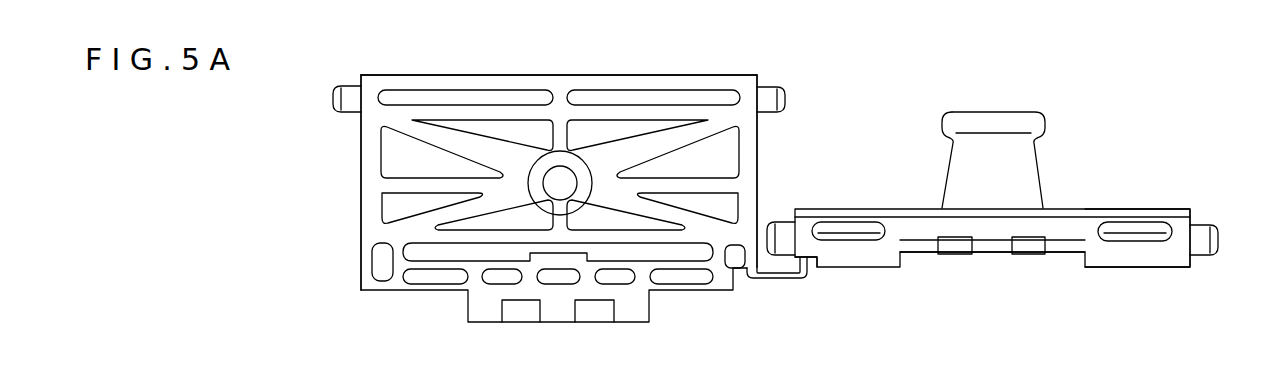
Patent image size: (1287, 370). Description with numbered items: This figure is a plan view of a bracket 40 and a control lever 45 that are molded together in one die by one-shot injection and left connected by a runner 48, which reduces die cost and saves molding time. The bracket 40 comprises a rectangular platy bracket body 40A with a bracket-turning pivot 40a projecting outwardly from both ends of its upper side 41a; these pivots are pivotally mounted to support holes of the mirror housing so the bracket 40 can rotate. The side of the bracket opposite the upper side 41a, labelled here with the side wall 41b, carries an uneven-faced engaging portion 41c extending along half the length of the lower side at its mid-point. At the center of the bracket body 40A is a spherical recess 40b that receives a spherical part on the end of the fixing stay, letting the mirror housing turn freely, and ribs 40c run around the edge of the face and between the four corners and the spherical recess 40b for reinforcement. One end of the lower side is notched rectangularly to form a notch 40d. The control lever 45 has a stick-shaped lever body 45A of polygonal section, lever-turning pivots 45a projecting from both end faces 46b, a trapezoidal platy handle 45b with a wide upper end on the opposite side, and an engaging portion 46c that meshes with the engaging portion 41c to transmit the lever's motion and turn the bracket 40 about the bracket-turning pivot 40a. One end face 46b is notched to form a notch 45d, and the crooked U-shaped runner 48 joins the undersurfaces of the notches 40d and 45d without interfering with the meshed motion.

The bracket 40 is at (348, 68).
The bracket body 40A is at (357, 196).
The bracket-turning pivot 40a is at (350, 98).
The spherical recess 40b is at (570, 183).
The ribs 40c is at (553, 133).
The notch 40d is at (742, 268).
The upper side 41a is at (522, 75).
The side wall 41b is at (358, 137).
The engaging portion 41c is at (632, 311).
The runner 48 is at (778, 279).
The control lever 45 is at (1076, 150).
The lever body 45A is at (1150, 206).
The lever-turning pivot 45a is at (781, 236).
The knob 45b is at (993, 120).
The notch 45d is at (812, 260).
The end face 46b is at (790, 212).
The engaging portion 46c is at (1023, 253).